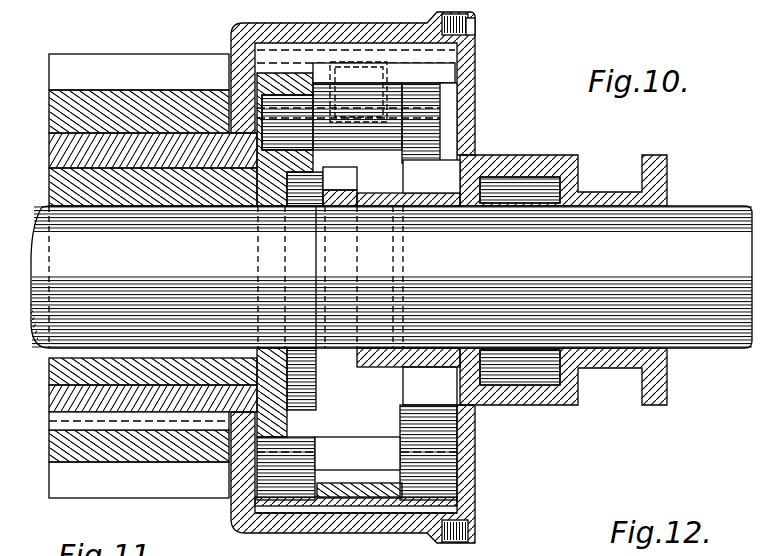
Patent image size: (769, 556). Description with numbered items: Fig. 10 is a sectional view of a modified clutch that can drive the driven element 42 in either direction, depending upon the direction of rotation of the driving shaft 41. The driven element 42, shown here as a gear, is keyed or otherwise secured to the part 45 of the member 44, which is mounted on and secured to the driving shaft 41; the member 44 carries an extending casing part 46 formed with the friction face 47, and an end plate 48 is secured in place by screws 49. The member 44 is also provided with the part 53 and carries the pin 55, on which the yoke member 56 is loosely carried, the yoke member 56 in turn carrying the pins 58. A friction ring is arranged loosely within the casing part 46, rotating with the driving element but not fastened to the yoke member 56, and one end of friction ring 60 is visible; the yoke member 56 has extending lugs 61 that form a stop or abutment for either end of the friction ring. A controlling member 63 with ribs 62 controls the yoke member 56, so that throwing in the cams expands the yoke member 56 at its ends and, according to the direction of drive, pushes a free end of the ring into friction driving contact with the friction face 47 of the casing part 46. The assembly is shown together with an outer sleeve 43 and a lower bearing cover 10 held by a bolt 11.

The lower bearing cover 10 is at (356, 534).
The bolt 11 is at (437, 5).
The driving shaft 41 is at (690, 207).
The driven element 42 is at (143, 100).
The outer sleeve 43 is at (78, 60).
The member 44 is at (58, 181).
The part 45 is at (58, 150).
The casing part 46 is at (354, 19).
The friction face 47 is at (315, 30).
The end plate 48 is at (475, 73).
The screws 49 is at (475, 36).
The part 53 is at (289, 80).
The pin 55 is at (475, 129).
The yoke member 56 is at (382, 493).
The pins 58 is at (452, 102).
The end of friction ring 60 is at (339, 358).
The extending lugs 61 is at (455, 78).
The ribs 62 is at (478, 163).
The controlling member 63 is at (438, 360).